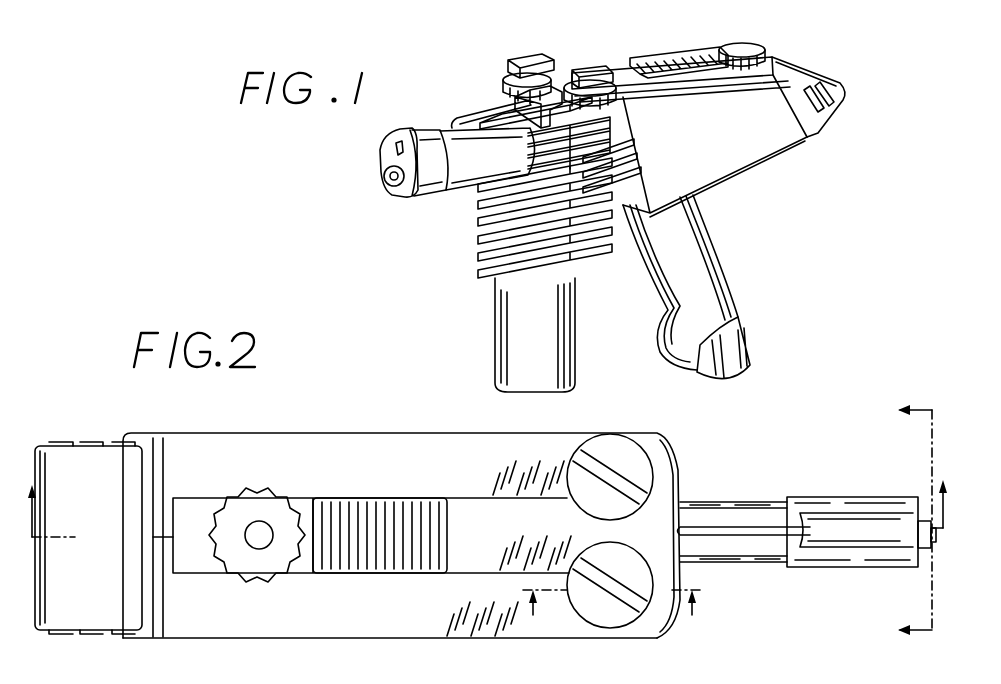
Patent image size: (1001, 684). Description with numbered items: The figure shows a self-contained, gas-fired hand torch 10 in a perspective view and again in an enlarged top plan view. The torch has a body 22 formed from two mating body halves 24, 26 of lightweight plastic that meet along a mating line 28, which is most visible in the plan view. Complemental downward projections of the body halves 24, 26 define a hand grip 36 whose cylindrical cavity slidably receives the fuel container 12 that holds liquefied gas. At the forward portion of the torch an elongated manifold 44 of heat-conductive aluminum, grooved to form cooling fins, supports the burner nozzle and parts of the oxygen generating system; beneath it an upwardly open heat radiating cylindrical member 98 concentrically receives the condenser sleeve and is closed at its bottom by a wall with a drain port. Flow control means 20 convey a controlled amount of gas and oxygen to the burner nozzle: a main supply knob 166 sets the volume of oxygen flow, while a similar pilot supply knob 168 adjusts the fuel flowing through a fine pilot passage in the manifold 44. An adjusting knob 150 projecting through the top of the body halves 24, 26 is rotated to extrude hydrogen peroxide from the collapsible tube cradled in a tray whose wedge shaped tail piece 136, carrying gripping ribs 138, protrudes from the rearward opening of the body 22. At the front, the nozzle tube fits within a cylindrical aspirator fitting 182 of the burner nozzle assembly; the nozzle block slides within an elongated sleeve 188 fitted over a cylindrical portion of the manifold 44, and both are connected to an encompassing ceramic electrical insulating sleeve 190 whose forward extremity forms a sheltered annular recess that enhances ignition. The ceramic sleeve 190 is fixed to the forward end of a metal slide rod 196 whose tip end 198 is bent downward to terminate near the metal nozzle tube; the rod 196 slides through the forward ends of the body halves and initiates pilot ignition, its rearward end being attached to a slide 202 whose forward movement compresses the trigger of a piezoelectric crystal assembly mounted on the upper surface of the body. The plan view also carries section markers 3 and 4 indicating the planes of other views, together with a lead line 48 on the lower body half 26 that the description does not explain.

In FIG. 1, the hand torch 10 is at (751, 165).
In FIG. 2, the hand torch 10 is at (899, 521).
In FIG. 1, the fuel container 12 is at (750, 355).
In FIG. 2, the flow control means 20 is at (636, 673).
In FIG. 1, the body 22 is at (766, 141).
In FIG. 2, the body 22 is at (381, 480).
In FIG. 1, the body half 24 is at (808, 137).
In FIG. 2, the body half 24 is at (311, 432).
In FIG. 2, the body half 26 is at (302, 639).
In FIG. 2, the mating line 28 is at (150, 537).
In FIG. 1, the hand grip 36 is at (722, 246).
In FIG. 1, the elongated manifold 44 is at (486, 242).
In FIG. 2, the housing section 48 is at (592, 678).
In FIG. 1, the heat radiating cylindrical member 98 is at (566, 352).
In FIG. 1, the wedge shaped tail piece 136 is at (795, 70).
In FIG. 2, the wedge shaped tail piece 136 is at (54, 613).
In FIG. 1, the ribs 138 is at (836, 98).
In FIG. 2, the ribs 138 is at (93, 443).
In FIG. 1, the adjusting knob 150 is at (770, 27).
In FIG. 2, the adjusting knob 150 is at (281, 484).
In FIG. 1, the main supply knob 166 is at (542, 58).
In FIG. 2, the main supply knob 166 is at (613, 626).
In FIG. 1, the pilot supply knob 168 is at (620, 100).
In FIG. 2, the pilot supply knob 168 is at (634, 448).
In FIG. 1, the cylindrical aspirator fitting 182 is at (386, 186).
In FIG. 2, the cylindrical aspirator fitting 182 is at (930, 545).
In FIG. 1, the elongated sleeve 188 is at (466, 143).
In FIG. 2, the elongated sleeve 188 is at (728, 563).
In FIG. 1, the ceramic electrical insulating sleeve 190 is at (428, 187).
In FIG. 2, the ceramic electrical insulating sleeve 190 is at (857, 487).
In FIG. 1, the metal slide rod 196 is at (477, 116).
In FIG. 2, the metal slide rod 196 is at (728, 526).
In FIG. 1, the tip end 198 is at (401, 150).
In FIG. 1, the slide 202 is at (683, 52).
In FIG. 2, the slide 202 is at (418, 505).
In FIG. 2, the section line 3 is at (490, 488).
In FIG. 2, the section line 4 is at (609, 629).